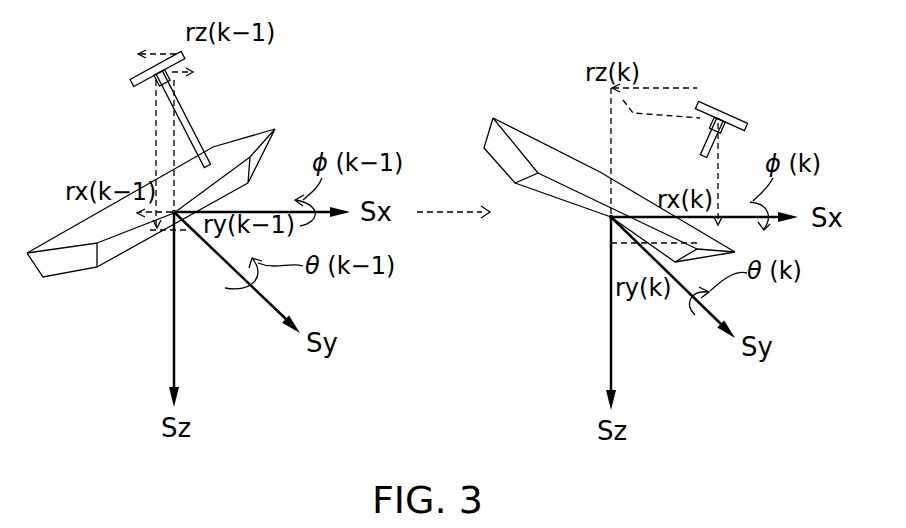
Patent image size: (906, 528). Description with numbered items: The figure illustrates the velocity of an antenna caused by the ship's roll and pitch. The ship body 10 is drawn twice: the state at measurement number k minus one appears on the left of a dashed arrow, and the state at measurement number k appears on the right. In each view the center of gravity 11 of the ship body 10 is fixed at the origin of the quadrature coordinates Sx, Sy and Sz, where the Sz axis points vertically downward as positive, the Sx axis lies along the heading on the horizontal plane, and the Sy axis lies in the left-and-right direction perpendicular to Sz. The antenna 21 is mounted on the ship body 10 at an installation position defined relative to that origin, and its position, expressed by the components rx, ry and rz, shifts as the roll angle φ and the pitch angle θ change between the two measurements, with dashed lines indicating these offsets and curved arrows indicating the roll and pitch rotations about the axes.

The ship body 10 is at (65, 243).
The center of gravity 11 is at (158, 214).
The antenna 21 is at (140, 78).